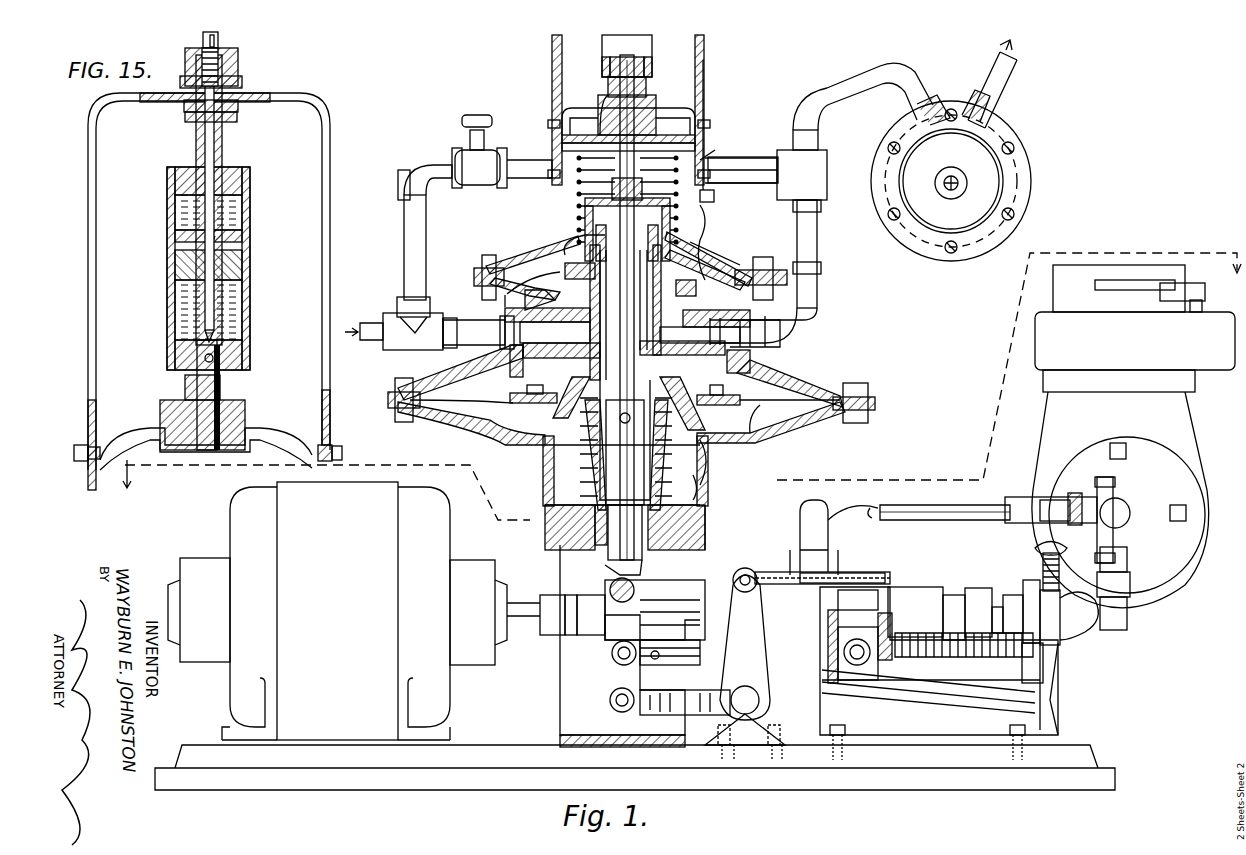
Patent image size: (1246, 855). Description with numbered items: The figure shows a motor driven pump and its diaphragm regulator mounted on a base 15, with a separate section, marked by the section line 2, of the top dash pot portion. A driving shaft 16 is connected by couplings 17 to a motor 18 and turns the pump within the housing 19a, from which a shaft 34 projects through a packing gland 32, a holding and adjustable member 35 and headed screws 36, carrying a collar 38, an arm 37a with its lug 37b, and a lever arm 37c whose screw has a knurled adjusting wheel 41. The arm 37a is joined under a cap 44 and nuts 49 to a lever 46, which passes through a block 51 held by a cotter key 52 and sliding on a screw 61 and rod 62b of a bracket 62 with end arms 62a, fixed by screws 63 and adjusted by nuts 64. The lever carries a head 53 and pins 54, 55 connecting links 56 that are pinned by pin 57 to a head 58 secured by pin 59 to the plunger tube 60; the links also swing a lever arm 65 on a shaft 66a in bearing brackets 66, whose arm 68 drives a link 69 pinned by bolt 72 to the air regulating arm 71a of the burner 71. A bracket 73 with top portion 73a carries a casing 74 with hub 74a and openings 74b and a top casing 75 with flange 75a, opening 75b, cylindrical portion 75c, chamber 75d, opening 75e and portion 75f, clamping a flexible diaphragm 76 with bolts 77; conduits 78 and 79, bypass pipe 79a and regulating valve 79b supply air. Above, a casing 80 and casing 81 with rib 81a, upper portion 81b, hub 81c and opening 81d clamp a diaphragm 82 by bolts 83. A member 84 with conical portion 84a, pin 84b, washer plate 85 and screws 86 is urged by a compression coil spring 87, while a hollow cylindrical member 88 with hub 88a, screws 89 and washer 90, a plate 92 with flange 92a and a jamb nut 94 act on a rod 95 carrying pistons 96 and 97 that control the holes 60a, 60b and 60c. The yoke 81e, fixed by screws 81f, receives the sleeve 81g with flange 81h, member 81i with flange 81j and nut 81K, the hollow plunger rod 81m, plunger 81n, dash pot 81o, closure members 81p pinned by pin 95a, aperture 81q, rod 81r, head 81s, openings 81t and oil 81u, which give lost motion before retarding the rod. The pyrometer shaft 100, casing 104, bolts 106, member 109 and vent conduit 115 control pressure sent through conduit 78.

In FIG. 1, the base 15 is at (735, 790).
In FIG. 1, the driving shaft 16 is at (655, 610).
In FIG. 1, the couplings 17 is at (548, 594).
In FIG. 1, the motor 18 is at (440, 672).
In FIG. 1, the housing 19a is at (834, 537).
In FIG. 15, the section line 2 is at (324, 482).
In FIG. 1, the section line 2 is at (1009, 357).
In FIG. 1, the packing gland 32 is at (950, 594).
In FIG. 1, the shaft 34 is at (999, 635).
In FIG. 1, the holding and adjustable member 35 is at (975, 586).
In FIG. 1, the headed screws 36 is at (888, 600).
In FIG. 1, the laterally projecting arm 37a is at (1080, 640).
In FIG. 1, the lug 37b is at (1045, 628).
In FIG. 1, the lever arm 37c is at (1060, 612).
In FIG. 1, the collar 38 is at (1043, 566).
In FIG. 1, the knurled adjusting wheel 41 is at (1035, 545).
In FIG. 1, the cap 44 is at (1008, 596).
In FIG. 1, the lever 46 is at (830, 620).
In FIG. 1, the nuts 49 is at (1023, 588).
In FIG. 1, the block 51 is at (865, 662).
In FIG. 1, the cotter key 52 is at (850, 675).
In FIG. 1, the head 53 is at (640, 632).
In FIG. 1, the pin 54 is at (652, 662).
In FIG. 1, the pin 55 is at (612, 692).
In FIG. 1, the links 56 is at (611, 650).
In FIG. 1, the pin 57 is at (610, 585).
In FIG. 1, the head 58 is at (645, 572).
In FIG. 1, the pin 59 is at (625, 532).
In FIG. 1, the plunger tube 60 is at (642, 552).
In FIG. 1, the holes 60a is at (664, 300).
In FIG. 1, the holes 60b is at (660, 380).
In FIG. 1, the holes 60c is at (625, 452).
In FIG. 1, the screw 61 is at (925, 632).
In FIG. 1, the bracket 62 is at (953, 673).
In FIG. 1, the end arms 62a is at (1050, 680).
In FIG. 1, the rod 62b is at (905, 692).
In FIG. 1, the screws 63 is at (927, 733).
In FIG. 1, the nuts 64 is at (828, 625).
In FIG. 1, the lever arm 65 is at (675, 715).
In FIG. 1, the bearing brackets 66 is at (760, 690).
In FIG. 1, the shaft 66a is at (745, 729).
In FIG. 1, the arm 68 is at (732, 590).
In FIG. 1, the link 69 is at (940, 522).
In FIG. 1, the burner 71 is at (1180, 423).
In FIG. 1, the air regulating arm 71a is at (1117, 492).
In FIG. 1, the bolt or pin 72 is at (1074, 495).
In FIG. 1, the bracket 73 is at (570, 540).
In FIG. 1, the plate-like top portion 73a is at (705, 530).
In FIG. 1, the casing 74 is at (745, 440).
In FIG. 1, the conical hub 74a is at (708, 470).
In FIG. 1, the openings 74b is at (700, 490).
In FIG. 1, the top casing 75 is at (785, 370).
In FIG. 1, the flange 75a is at (870, 408).
In FIG. 1, the opening 75b is at (597, 548).
In FIG. 1, the central cylindrical portion 75c is at (560, 240).
In FIG. 1, the chamber 75d is at (590, 282).
In FIG. 1, the opening 75e is at (474, 322).
In FIG. 1, the cylindrical portion 75f is at (642, 327).
In FIG. 1, the flexible diaphragm 76 is at (500, 420).
In FIG. 1, the bolts 77 is at (862, 385).
In FIG. 1, the conduit 78 is at (819, 204).
In FIG. 1, the conduit 79 is at (390, 318).
In FIG. 1, the pipe 79a is at (404, 222).
In FIG. 1, the regulating valve 79b is at (468, 148).
In FIG. 1, the casing 80 is at (490, 300).
In FIG. 1, the casing 81 is at (725, 166).
In FIG. 1, the rib or flange 81a is at (480, 270).
In FIG. 1, the cylindrical upper portion 81b is at (700, 140).
In FIG. 1, the central hub 81c is at (562, 120).
In FIG. 1, the opening 81d is at (707, 202).
In FIG. 15, the yoke 81e is at (328, 110).
In FIG. 1, the yoke 81e is at (704, 95).
In FIG. 15, the screws 81f is at (80, 447).
In FIG. 1, the screws 81f is at (710, 130).
In FIG. 15, the sleeve 81g is at (240, 108).
In FIG. 15, the head or flange 81h is at (238, 120).
In FIG. 15, the member 81i is at (238, 62).
In FIG. 15, the projecting flange 81j is at (244, 82).
In FIG. 15, the nut 81K is at (240, 46).
In FIG. 15, the hollow plunger rod 81m is at (196, 130).
In FIG. 15, the plunger or piston 81n is at (250, 242).
In FIG. 15, the dash pot 81o is at (250, 212).
In FIG. 1, the dash pot 81o is at (602, 44).
In FIG. 15, the closure members 81p is at (238, 168).
In FIG. 1, the closure members 81p is at (650, 57).
In FIG. 15, the aperture 81q is at (175, 265).
In FIG. 15, the rod 81r is at (205, 150).
In FIG. 15, the head 81s is at (202, 40).
In FIG. 15, the openings 81t is at (172, 240).
In FIG. 15, the liquid or oil 81u is at (250, 292).
In FIG. 1, the flexible diaphragm 82 is at (700, 118).
In FIG. 1, the bolts 83 is at (648, 84).
In FIG. 1, the member 84 is at (705, 418).
In FIG. 1, the conical central portion 84a is at (572, 378).
In FIG. 1, the pin 84b is at (670, 416).
In FIG. 1, the washer plate 85 is at (522, 390).
In FIG. 1, the screws 86 is at (714, 385).
In FIG. 1, the compression coil spring 87 is at (580, 414).
In FIG. 1, the hollow cylindrical member 88 is at (690, 190).
In FIG. 1, the hub 88a is at (565, 232).
In FIG. 1, the screws 89 is at (715, 258).
In FIG. 1, the washer 90 is at (691, 290).
In FIG. 1, the plate 92 is at (637, 117).
In FIG. 1, the depending flange 92a is at (562, 138).
In FIG. 15, the jamb nut 94 is at (245, 408).
In FIG. 1, the jamb nut 94 is at (600, 104).
In FIG. 15, the rod 95 is at (197, 374).
In FIG. 1, the rod 95 is at (700, 80).
In FIG. 15, the pin 95a is at (250, 350).
In FIG. 1, the piston 96 is at (605, 380).
In FIG. 1, the second piston 97 is at (711, 242).
In FIG. 1, the shaft 100 is at (960, 180).
In FIG. 1, the casing 104 is at (1030, 160).
In FIG. 1, the bolts 106 is at (1030, 184).
In FIG. 1, the member 109 is at (955, 192).
In FIG. 1, the conduit 115 is at (1000, 80).